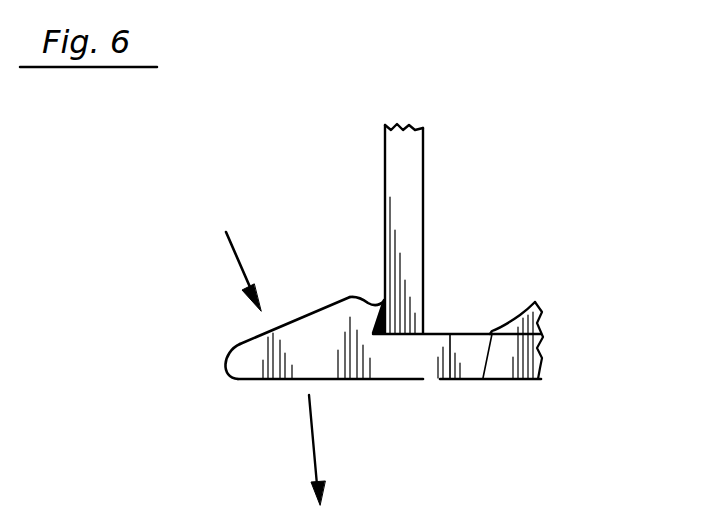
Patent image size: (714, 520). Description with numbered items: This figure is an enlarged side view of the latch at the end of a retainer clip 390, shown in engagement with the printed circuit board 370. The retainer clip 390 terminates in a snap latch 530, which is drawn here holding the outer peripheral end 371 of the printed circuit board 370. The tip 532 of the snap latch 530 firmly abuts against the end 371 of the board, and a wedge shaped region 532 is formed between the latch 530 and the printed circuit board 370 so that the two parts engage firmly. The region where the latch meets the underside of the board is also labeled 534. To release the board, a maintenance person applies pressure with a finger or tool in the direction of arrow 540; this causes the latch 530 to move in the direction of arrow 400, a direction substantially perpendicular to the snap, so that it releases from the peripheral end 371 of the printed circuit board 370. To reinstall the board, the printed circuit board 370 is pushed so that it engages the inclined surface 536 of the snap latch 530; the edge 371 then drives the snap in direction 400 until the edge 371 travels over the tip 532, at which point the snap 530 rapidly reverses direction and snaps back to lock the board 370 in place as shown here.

The snap latch 530 is at (310, 350).
The tip of the snap latch 532 is at (353, 297).
The lower junction of shoe and bar 534 is at (373, 334).
The inclined surface 536 is at (317, 298).
The printed circuit board 370 is at (410, 207).
The outer peripheral end of the printed circuit board 371 is at (407, 322).
The retainer clip 390 is at (553, 363).
The arrow 400 is at (313, 440).
The arrow 540 is at (232, 266).